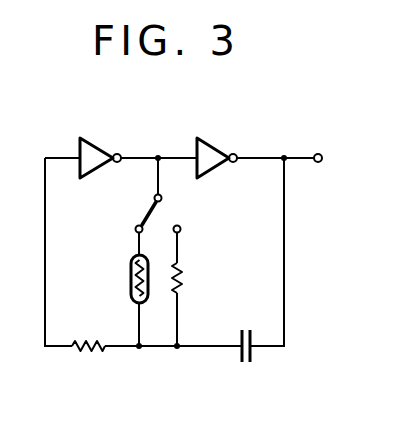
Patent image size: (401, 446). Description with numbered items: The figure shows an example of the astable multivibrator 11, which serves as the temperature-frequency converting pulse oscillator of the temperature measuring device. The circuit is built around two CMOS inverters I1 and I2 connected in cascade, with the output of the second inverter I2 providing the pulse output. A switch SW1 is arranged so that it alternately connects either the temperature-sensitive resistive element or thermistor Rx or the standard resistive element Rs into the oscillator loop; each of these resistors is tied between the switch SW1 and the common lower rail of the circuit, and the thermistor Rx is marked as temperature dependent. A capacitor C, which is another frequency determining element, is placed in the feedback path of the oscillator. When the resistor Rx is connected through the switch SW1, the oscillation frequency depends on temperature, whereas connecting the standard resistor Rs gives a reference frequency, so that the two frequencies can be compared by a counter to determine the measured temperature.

The astable multivibrator 11 is at (213, 264).
The CMOS inverter I1 is at (96, 151).
The CMOS inverter I2 is at (210, 151).
The switch SW1 is at (158, 215).
The temperature-sensitive resistive element (thermistor) Rx is at (130, 283).
The standard resistive element Rs is at (184, 283).
The capacitor C is at (247, 330).